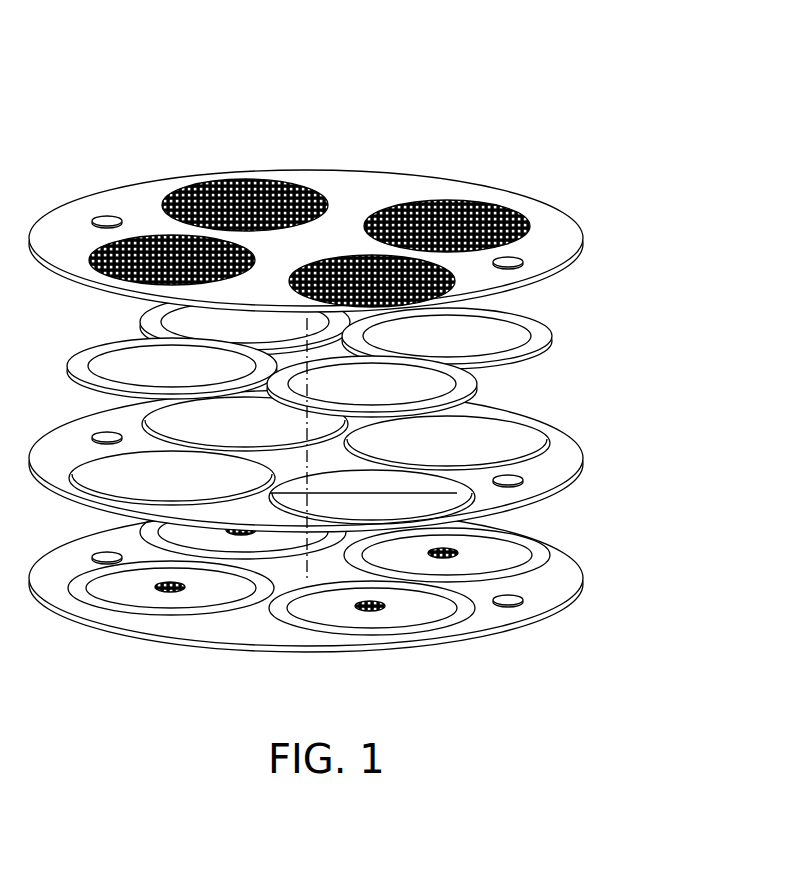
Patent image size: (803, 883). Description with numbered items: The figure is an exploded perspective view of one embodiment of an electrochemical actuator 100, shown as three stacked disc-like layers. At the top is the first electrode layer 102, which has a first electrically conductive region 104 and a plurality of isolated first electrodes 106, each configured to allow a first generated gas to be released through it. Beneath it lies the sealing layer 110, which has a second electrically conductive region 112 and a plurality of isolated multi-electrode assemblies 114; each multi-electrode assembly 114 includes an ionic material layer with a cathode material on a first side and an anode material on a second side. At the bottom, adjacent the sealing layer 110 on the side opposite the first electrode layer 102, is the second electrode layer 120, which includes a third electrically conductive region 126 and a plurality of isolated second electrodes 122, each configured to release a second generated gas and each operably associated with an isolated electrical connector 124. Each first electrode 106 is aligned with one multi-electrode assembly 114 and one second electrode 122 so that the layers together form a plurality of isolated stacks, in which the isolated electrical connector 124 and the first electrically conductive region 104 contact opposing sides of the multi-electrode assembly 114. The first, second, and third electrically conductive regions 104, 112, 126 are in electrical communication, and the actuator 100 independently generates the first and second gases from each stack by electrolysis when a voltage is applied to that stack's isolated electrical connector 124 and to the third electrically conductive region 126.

The electrochemical actuator 100 is at (340, 82).
The first electrode layer 102 is at (85, 152).
The first electrically conductive region 104 is at (352, 186).
The first electrodes 106 is at (277, 181).
The sealing layer 110 is at (630, 308).
The second electrically conductive region 112 is at (556, 482).
The multi-electrode assemblies 114 is at (173, 317).
The second electrode layer 120 is at (80, 628).
The second electrodes 122 is at (500, 560).
The isolated electrical connector 124 is at (447, 552).
The third electrically conductive region 126 is at (503, 608).